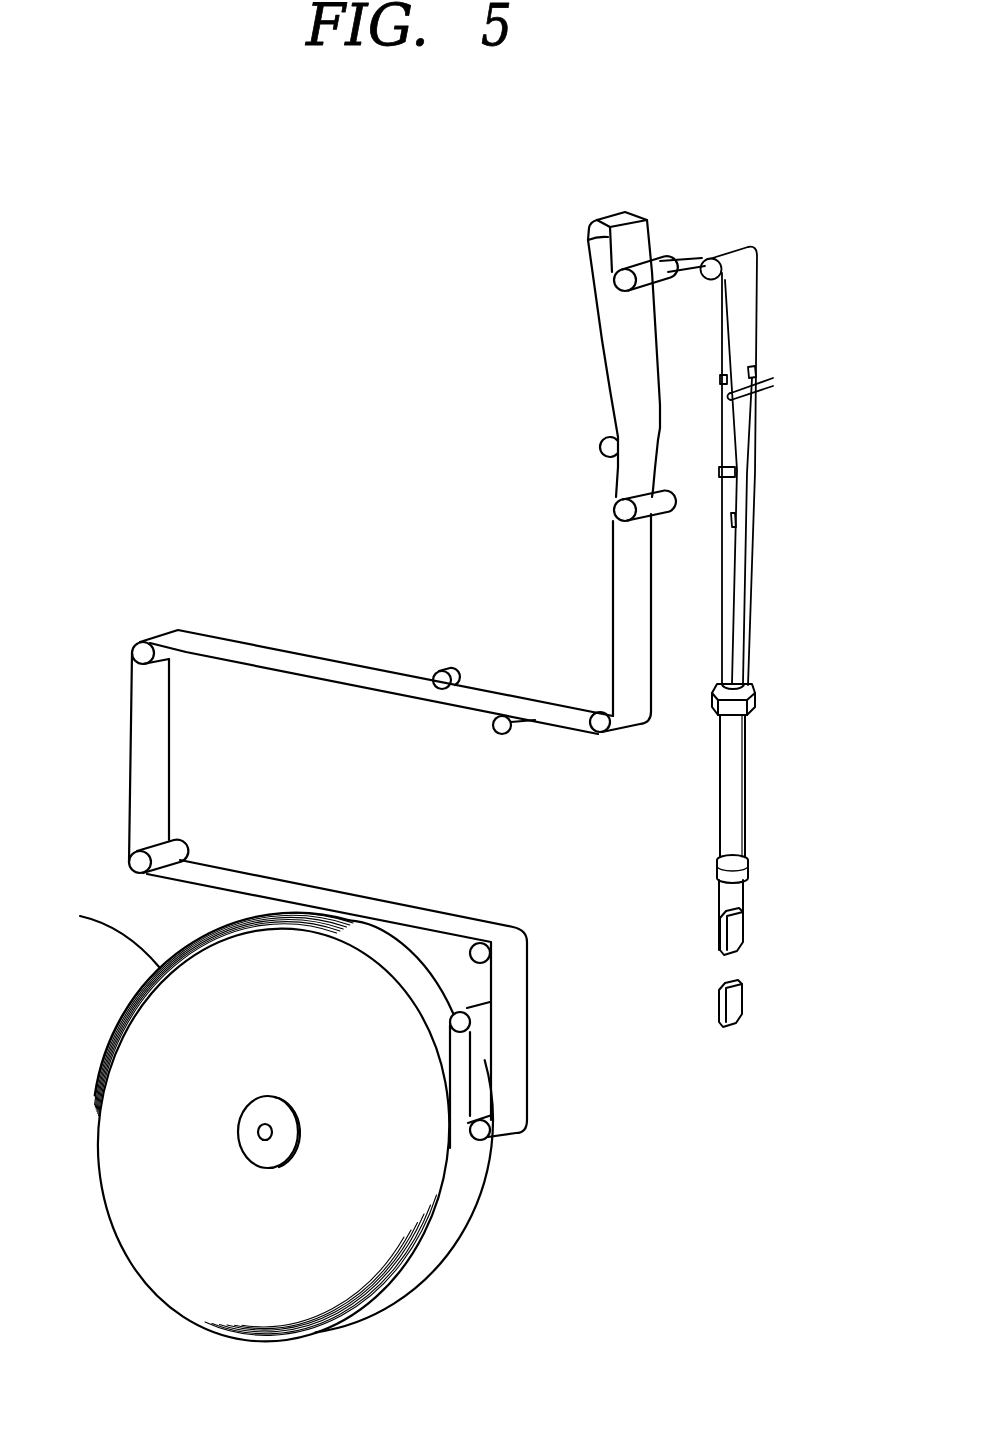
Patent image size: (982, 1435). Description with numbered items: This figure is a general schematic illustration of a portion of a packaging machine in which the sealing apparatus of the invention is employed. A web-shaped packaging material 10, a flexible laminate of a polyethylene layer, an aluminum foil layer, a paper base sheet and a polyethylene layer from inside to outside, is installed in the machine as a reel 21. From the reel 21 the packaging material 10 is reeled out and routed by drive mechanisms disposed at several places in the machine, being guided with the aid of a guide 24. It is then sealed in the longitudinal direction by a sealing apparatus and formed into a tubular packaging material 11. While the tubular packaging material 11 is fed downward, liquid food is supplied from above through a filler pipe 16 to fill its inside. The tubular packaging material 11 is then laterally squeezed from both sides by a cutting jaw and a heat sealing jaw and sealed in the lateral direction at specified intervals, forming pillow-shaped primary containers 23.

The web-shaped packaging material 10 is at (253, 650).
The tubular packaging material 11 is at (748, 762).
The filler pipe 16 is at (760, 397).
The reel 21 is at (162, 968).
The pillow-shaped primary containers 23 is at (744, 934).
The guide 24 is at (754, 370).